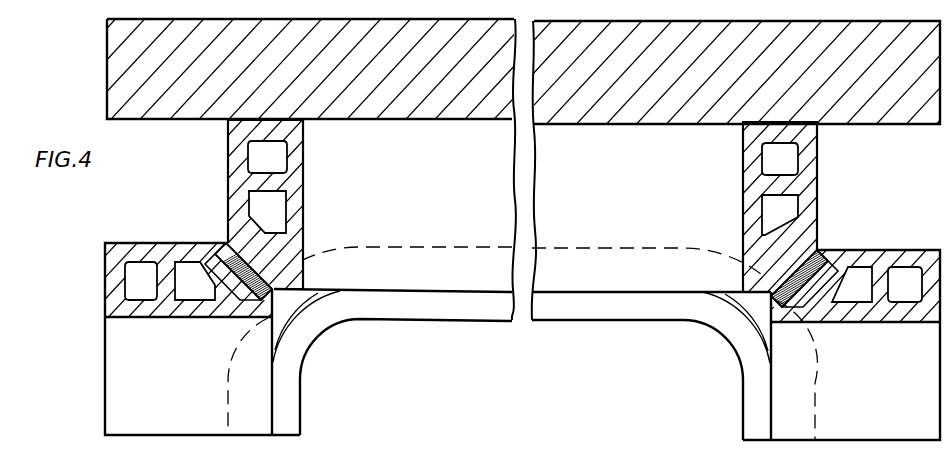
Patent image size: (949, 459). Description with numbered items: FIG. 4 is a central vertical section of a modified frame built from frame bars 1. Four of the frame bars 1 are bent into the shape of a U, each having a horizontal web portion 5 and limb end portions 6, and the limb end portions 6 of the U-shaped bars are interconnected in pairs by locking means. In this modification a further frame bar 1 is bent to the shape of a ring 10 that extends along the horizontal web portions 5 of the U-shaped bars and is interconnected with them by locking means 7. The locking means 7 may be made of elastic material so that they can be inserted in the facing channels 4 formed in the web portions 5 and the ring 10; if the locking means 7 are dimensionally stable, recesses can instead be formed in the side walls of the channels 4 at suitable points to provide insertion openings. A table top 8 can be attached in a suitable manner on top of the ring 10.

The frame bar 1 is at (228, 152).
The channel 4 is at (300, 258).
The web portion 5 is at (444, 305).
The limb end portion 6 is at (105, 368).
The locking means 7 is at (222, 246).
The table top 8 is at (886, 107).
The ring 10 is at (253, 182).